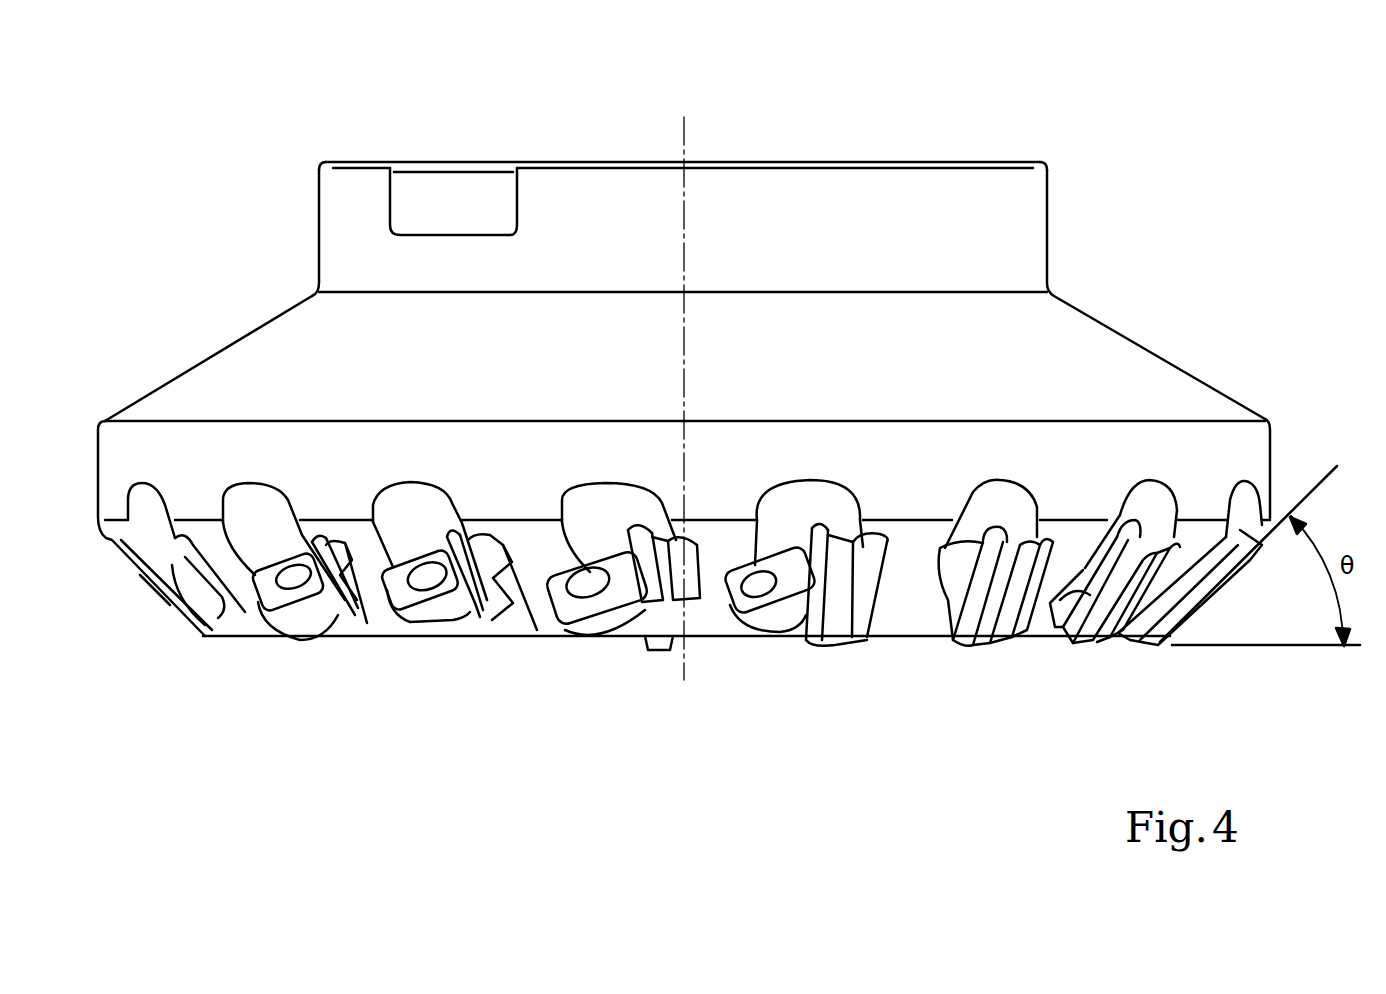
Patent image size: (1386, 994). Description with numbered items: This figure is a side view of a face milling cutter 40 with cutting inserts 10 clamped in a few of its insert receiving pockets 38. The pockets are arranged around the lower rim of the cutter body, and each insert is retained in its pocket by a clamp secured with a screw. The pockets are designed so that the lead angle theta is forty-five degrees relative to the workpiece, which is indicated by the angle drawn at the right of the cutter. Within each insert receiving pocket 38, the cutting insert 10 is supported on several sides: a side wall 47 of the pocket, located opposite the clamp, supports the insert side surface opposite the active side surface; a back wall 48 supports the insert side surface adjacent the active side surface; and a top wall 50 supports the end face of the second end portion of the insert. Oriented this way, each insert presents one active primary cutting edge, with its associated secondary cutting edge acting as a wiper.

The cutting insert 10 is at (985, 624).
The insert receiving pocket 38 is at (648, 642).
The face milling cutter 40 is at (862, 210).
The side wall 47 is at (716, 578).
The back wall 48 is at (668, 642).
The top wall 50 is at (671, 540).